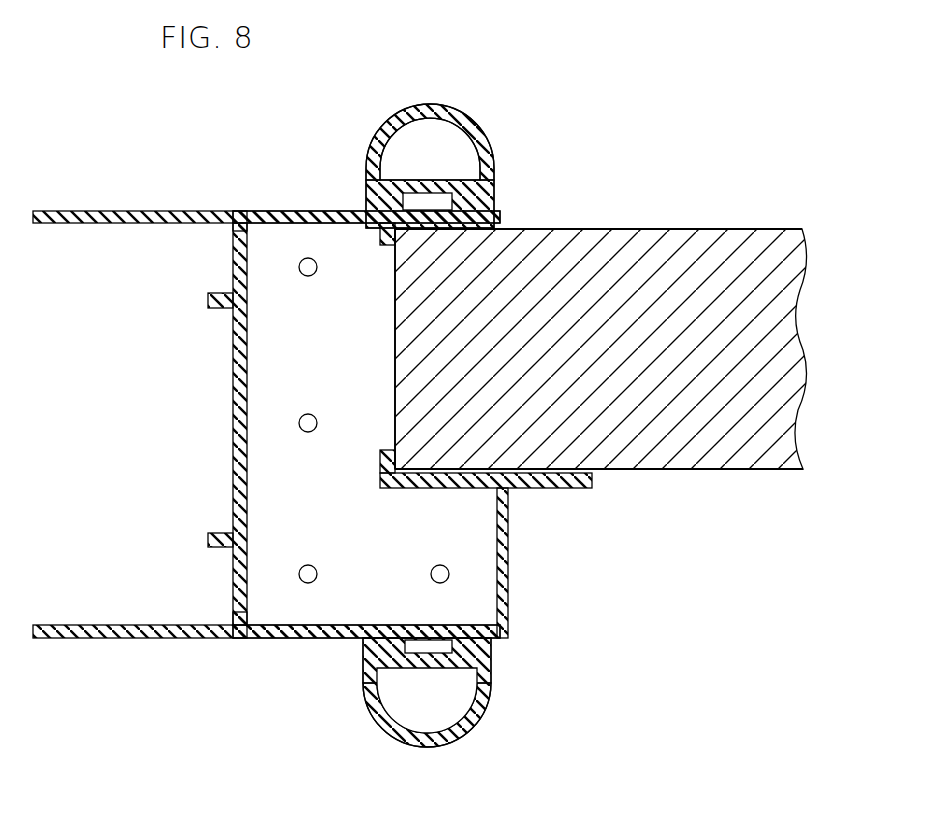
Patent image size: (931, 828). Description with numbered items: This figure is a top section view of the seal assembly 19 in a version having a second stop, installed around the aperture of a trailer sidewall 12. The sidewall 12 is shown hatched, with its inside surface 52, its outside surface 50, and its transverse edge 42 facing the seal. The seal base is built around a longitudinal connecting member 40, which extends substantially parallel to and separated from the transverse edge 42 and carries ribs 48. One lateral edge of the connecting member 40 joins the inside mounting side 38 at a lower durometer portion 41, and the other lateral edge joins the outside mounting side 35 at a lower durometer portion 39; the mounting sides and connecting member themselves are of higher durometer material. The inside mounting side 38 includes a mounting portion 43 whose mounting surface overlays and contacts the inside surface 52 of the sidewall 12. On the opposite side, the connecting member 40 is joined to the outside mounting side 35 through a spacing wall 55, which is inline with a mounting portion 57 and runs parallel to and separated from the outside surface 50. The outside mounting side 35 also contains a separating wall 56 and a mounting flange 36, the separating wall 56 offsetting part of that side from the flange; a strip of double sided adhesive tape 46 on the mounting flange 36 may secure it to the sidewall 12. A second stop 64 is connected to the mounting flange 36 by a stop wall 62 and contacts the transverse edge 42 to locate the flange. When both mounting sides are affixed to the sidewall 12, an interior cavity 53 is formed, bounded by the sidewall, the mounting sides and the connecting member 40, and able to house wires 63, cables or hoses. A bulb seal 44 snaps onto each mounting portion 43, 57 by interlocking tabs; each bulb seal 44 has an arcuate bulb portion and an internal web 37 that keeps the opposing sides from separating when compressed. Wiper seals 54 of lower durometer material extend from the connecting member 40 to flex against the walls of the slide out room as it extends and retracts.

The seal assembly 19 is at (170, 150).
The sidewall 12 is at (640, 265).
The outside mounting side 35 is at (350, 712).
The mounting flange 36 is at (556, 490).
The internal web 37 is at (436, 652).
The inside mounting side 38 is at (284, 195).
The lower durometer portion 39 is at (240, 640).
The connecting member 40 is at (233, 418).
The lower durometer portion 41 is at (242, 210).
The transverse edge 42 is at (398, 355).
The mounting portion 43 is at (498, 228).
The bulb seal 44 is at (462, 95).
The double sided adhesive tape 46 is at (608, 477).
The ribs 48 is at (208, 298).
The outside surface 50 is at (760, 470).
The inside surface 52 is at (705, 228).
The interior cavity 53 is at (338, 356).
The wiper seals 54 is at (57, 210).
The spacing wall 55 is at (300, 638).
The separating wall 56 is at (510, 575).
The mounting portion 57 is at (425, 625).
The stop wall 62 is at (388, 488).
The wires 63 is at (316, 432).
The second stop 64 is at (380, 470).